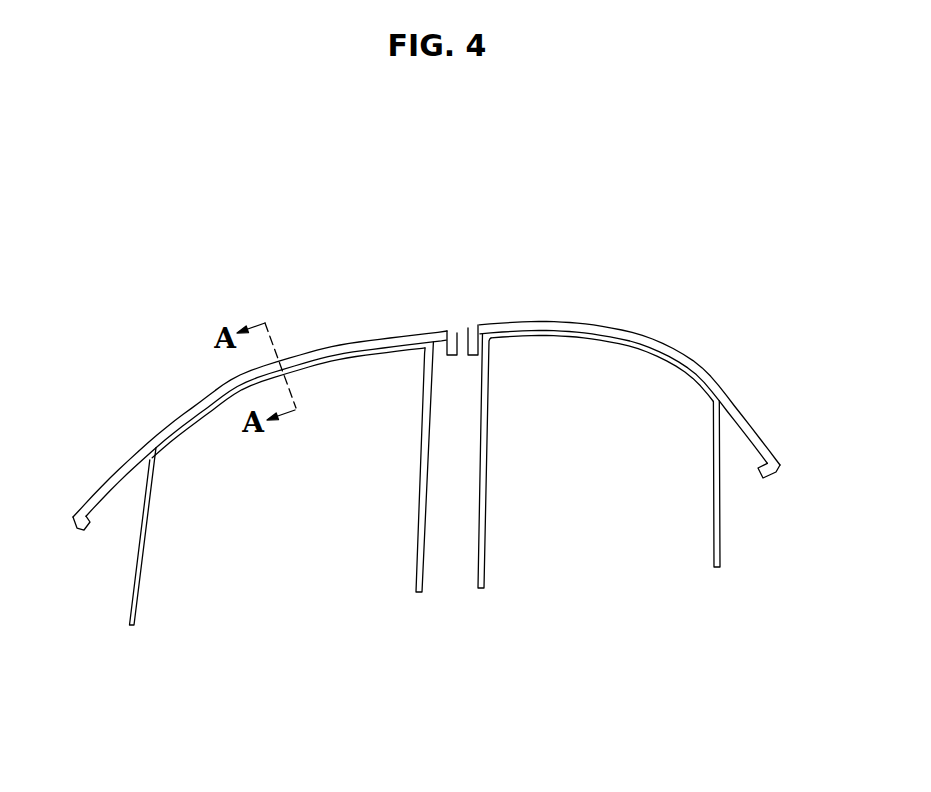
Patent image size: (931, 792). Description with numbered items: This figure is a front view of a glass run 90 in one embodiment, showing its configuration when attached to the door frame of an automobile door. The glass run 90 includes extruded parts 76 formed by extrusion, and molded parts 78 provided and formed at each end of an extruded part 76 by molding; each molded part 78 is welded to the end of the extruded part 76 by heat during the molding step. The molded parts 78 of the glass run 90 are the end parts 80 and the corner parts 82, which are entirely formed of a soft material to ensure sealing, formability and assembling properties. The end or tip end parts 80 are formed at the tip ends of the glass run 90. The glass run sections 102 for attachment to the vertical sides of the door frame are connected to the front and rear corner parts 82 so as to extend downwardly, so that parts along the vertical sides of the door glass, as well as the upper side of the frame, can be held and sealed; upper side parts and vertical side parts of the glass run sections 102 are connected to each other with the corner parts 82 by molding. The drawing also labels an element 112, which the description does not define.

The extruded part 76 is at (318, 372).
The molded part 78 is at (462, 316).
The end part 80 is at (452, 330).
The corner part 82 is at (412, 352).
The glass run 90 is at (732, 374).
The glass run section 102 is at (148, 565).
The end lip 112 is at (78, 537).